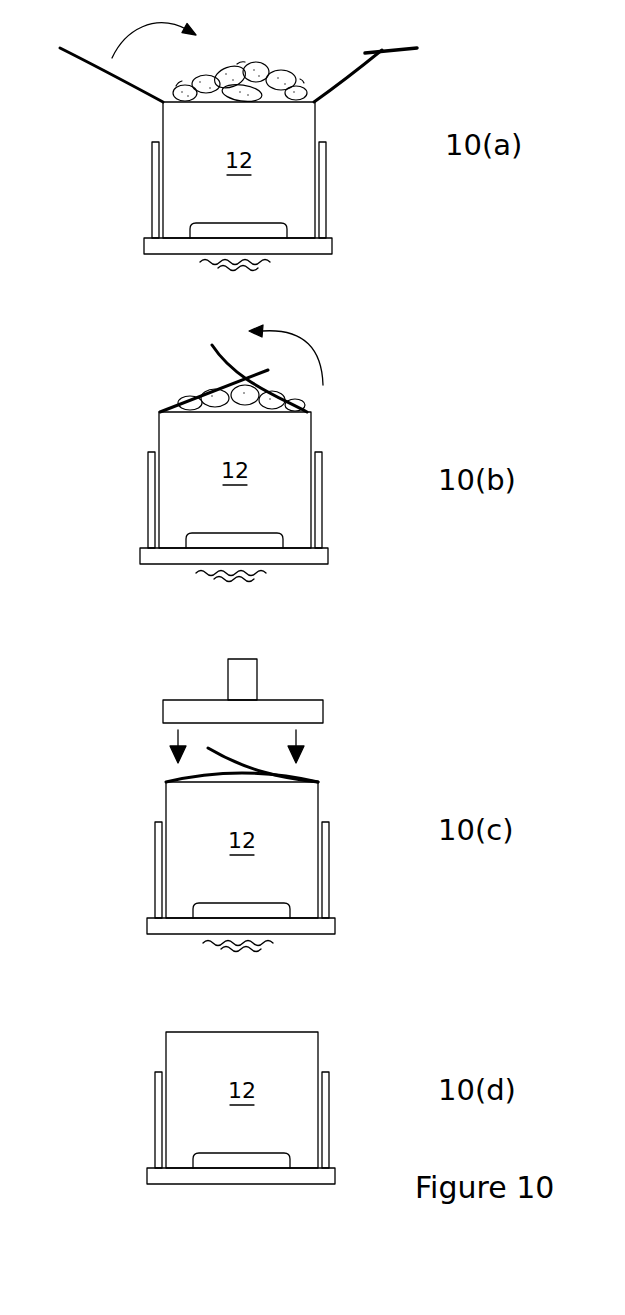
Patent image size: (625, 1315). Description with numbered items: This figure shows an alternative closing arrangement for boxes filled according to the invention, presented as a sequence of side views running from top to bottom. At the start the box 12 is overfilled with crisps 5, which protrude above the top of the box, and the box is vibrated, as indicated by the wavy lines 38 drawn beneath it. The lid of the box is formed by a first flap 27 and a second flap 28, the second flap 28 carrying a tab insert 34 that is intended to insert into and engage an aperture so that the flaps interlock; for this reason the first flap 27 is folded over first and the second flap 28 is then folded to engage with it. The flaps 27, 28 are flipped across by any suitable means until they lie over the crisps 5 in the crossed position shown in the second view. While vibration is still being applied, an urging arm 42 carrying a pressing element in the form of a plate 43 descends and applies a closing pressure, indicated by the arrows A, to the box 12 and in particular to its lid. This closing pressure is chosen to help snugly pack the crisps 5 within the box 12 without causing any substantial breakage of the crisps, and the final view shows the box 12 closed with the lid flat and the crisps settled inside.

The crisps 5 is at (250, 87).
The box 12 is at (237, 643).
The first flap 27 is at (120, 89).
The second flap 28 is at (350, 78).
The tab insert 34 is at (377, 51).
The wavy lines 38 is at (258, 261).
The urging arm 42 is at (245, 672).
The plate 43 is at (313, 710).
The arrows A is at (297, 733).